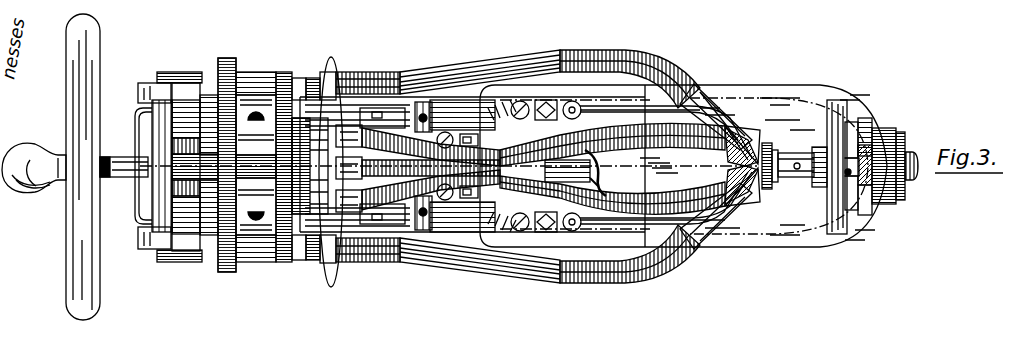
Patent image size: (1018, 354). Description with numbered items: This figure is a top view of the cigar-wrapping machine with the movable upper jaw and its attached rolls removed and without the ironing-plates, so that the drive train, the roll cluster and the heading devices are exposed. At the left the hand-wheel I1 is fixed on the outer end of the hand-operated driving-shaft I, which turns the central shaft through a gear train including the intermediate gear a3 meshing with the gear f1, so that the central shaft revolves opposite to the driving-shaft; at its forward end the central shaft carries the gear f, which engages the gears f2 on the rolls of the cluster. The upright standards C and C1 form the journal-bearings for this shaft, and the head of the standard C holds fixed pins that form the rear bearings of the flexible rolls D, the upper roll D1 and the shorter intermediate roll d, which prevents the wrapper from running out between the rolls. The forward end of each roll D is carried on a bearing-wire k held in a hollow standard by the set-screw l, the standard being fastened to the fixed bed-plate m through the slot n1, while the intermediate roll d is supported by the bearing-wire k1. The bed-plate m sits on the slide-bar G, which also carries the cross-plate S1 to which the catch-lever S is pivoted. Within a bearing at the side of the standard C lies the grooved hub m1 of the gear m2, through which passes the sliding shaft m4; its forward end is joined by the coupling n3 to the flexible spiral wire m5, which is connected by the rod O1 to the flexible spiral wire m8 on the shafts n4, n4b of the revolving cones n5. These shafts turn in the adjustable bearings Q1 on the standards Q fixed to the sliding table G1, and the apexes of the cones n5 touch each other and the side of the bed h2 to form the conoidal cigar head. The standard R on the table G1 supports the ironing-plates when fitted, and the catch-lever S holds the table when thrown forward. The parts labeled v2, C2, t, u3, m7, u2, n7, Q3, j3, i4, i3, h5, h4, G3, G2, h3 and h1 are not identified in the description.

The hand-wheel I1 is at (51, 167).
The hand-operated driving-shaft I is at (124, 167).
The bracket v2 is at (137, 146).
The gear casing C2 is at (162, 166).
The bearing block t is at (140, 238).
The sliding shaft m4 is at (180, 70).
The standard C1 is at (190, 110).
The gear f1 is at (195, 156).
The gear m2 is at (227, 50).
The standard C is at (256, 165).
The clutch member u3 is at (256, 165).
The gear f2 is at (256, 161).
The gear m7 is at (256, 167).
The hub m1 is at (286, 62).
The shaft of revolving cone n4 is at (294, 171).
The coupling n3 is at (318, 170).
The clutch u2 is at (310, 166).
The cross-plate S1 is at (331, 57).
The slide-bar G is at (475, 164).
The standard R is at (423, 166).
The revolving cone n5 is at (478, 136).
The standard Q is at (683, 166).
The adjustable bearing Q1 is at (720, 227).
The slot n1 is at (548, 100).
The clamp n7 is at (570, 165).
The set-screw l is at (585, 100).
The bearing-wire k is at (640, 165).
The flexible spiral wire m5 is at (368, 169).
The rod or shaft O1 is at (465, 60).
The flexible spiral wire m8 is at (644, 44).
The catch-lever S is at (372, 165).
The gear f is at (431, 162).
The flexible roll D is at (612, 144).
The upper roll D1 is at (612, 194).
The intermediate gear a3 is at (567, 171).
The intermediate roll d is at (595, 169).
The bearing-wire k1 is at (594, 177).
The bed-plate m is at (645, 157).
The shaft of revolving cone n4b is at (738, 120).
The tube Q3 is at (718, 100).
The bed h2 is at (770, 189).
The disc j3 is at (776, 148).
The shaft i4 is at (796, 150).
The bearing i3 is at (819, 160).
The sliding table G1 is at (837, 167).
The pin h5 is at (844, 163).
The collar h4 is at (850, 166).
The gear G3 is at (865, 151).
The gear G2 is at (877, 171).
The gear h3 is at (905, 145).
The knob h1 is at (912, 182).